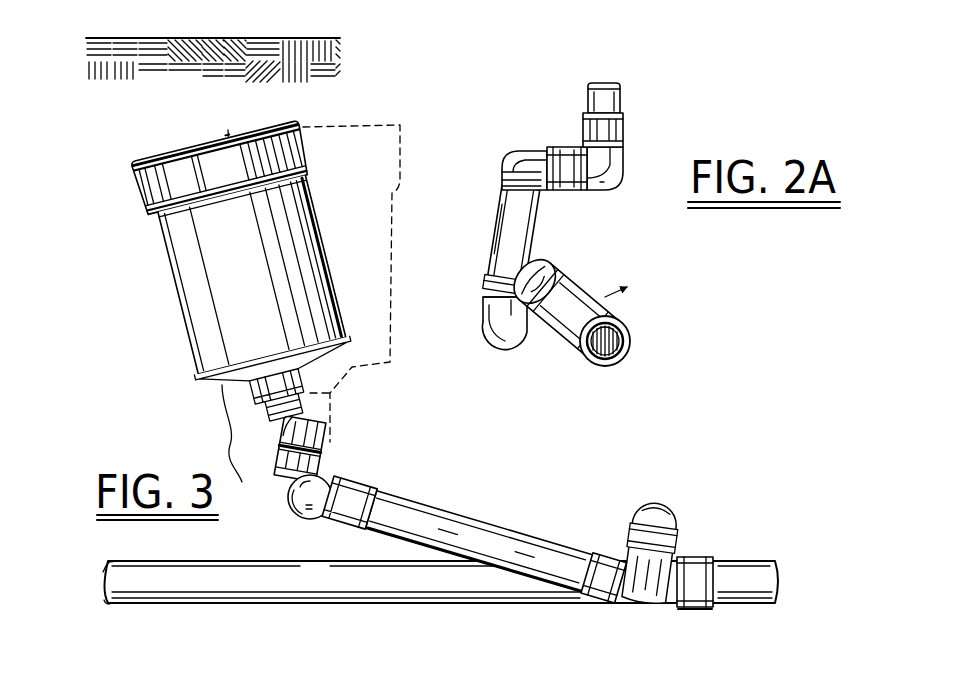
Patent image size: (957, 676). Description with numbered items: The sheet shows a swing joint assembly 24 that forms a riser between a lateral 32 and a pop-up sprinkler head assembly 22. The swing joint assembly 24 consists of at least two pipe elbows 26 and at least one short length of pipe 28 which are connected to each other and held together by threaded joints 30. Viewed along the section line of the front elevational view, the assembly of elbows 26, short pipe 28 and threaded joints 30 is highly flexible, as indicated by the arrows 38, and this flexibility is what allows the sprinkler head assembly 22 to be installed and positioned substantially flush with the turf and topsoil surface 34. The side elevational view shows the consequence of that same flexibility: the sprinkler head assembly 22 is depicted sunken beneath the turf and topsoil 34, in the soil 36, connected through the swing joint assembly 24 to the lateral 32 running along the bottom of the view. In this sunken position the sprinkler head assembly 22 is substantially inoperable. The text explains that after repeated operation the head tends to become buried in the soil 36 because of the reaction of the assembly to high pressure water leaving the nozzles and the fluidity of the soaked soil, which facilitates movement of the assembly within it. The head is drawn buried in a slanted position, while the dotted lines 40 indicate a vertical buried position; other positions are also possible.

In FIG. 3, the sprinkler head assembly 22 is at (320, 235).
In FIG. 3, the swing joint assembly 24 is at (488, 488).
In FIG. 2A, the swing joint assembly 24 is at (458, 238).
In FIG. 2A, the pipe elbow 26 is at (509, 157).
In FIG. 2A, the short length of pipe 28 is at (620, 97).
In FIG. 3, the threaded joint 30 is at (322, 441).
In FIG. 2A, the threaded joint 30 is at (580, 113).
In FIG. 3, the lateral 32 is at (733, 560).
In FIG. 2A, the lateral 32 is at (628, 337).
In FIG. 3, the turf and topsoil surface 34 is at (335, 57).
In FIG. 3, the soil 36 is at (162, 124).
In FIG. 2A, the soil 36 is at (590, 236).
In FIG. 3, the arrows 38 is at (407, 487).
In FIG. 2A, the arrows 38 is at (556, 347).
In FIG. 3, the dotted lines 40 is at (398, 300).